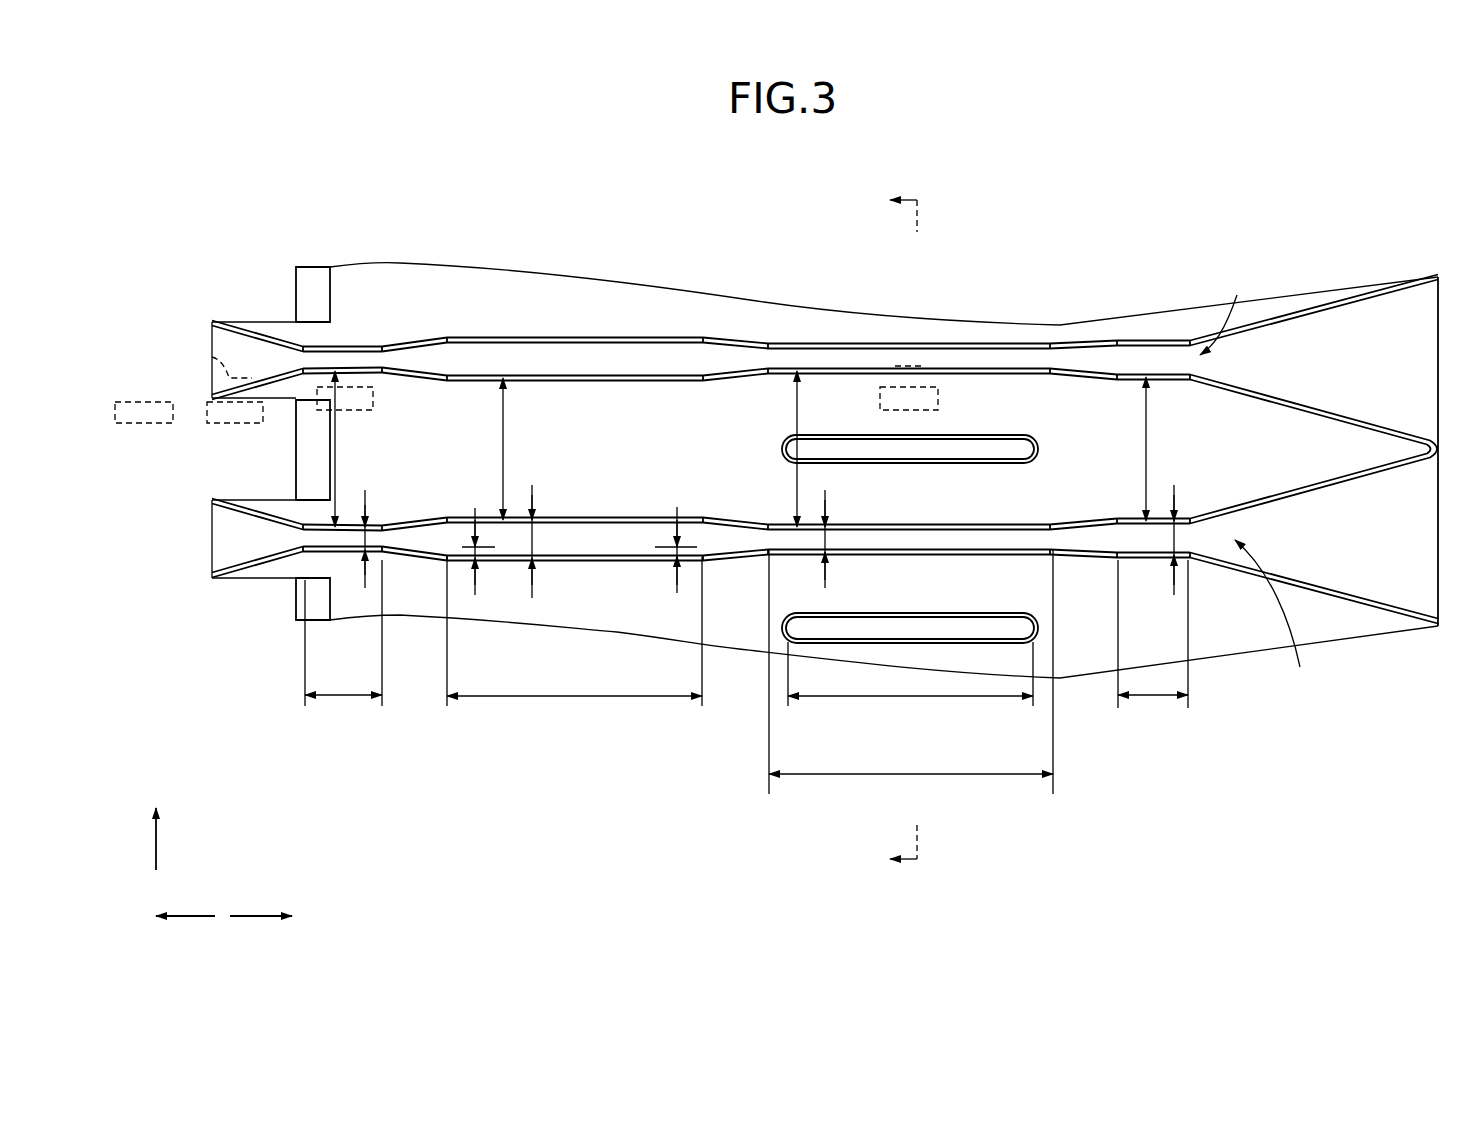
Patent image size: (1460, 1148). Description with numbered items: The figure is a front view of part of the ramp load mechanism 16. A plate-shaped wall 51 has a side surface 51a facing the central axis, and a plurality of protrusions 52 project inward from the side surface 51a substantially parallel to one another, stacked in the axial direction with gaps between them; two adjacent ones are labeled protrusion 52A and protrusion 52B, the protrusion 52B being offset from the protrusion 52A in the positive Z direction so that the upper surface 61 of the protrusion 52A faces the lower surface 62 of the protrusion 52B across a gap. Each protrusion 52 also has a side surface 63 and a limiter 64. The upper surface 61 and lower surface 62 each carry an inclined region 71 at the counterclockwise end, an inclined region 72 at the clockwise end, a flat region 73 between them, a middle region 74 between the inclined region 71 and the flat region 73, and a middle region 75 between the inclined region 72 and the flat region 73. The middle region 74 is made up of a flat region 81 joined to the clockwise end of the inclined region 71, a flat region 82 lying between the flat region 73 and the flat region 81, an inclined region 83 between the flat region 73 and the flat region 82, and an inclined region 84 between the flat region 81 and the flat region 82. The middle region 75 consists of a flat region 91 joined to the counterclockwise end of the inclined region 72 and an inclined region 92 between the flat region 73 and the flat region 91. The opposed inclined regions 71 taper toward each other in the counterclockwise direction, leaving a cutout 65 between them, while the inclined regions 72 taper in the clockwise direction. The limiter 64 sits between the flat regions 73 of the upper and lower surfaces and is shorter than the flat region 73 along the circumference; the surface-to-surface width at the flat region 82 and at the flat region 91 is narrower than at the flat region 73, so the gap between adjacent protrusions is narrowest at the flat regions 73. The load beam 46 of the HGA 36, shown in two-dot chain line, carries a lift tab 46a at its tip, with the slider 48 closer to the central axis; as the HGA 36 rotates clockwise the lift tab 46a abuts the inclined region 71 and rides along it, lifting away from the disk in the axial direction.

The ramp load mechanism 16 is at (180, 221).
The HGA 36 is at (523, 328).
The load beam 46 is at (523, 328).
The lift tab 46a is at (152, 362).
The slider 48 is at (222, 426).
The wall 51 is at (1413, 405).
The side surface 51a is at (1387, 347).
The protrusion 52 is at (548, 302).
The protrusion 52A is at (1325, 565).
The protrusion 52B is at (1330, 460).
The upper surface 61 is at (1022, 548).
The lower surface 62 is at (1103, 526).
The side surface 63 is at (360, 280).
The limiter 64 is at (912, 452).
The cutout 65 is at (272, 453).
The inclined region 71 is at (275, 350).
The inclined region 72 is at (1255, 348).
The flat region 73 is at (880, 350).
The middle region 74 is at (575, 504).
The middle region 75 is at (1191, 473).
The flat region 81 is at (338, 355).
The flat region 82 is at (635, 355).
The inclined region 83 is at (752, 354).
The inclined region 84 is at (405, 355).
The flat region 91 is at (1152, 377).
The inclined region 92 is at (1098, 354).